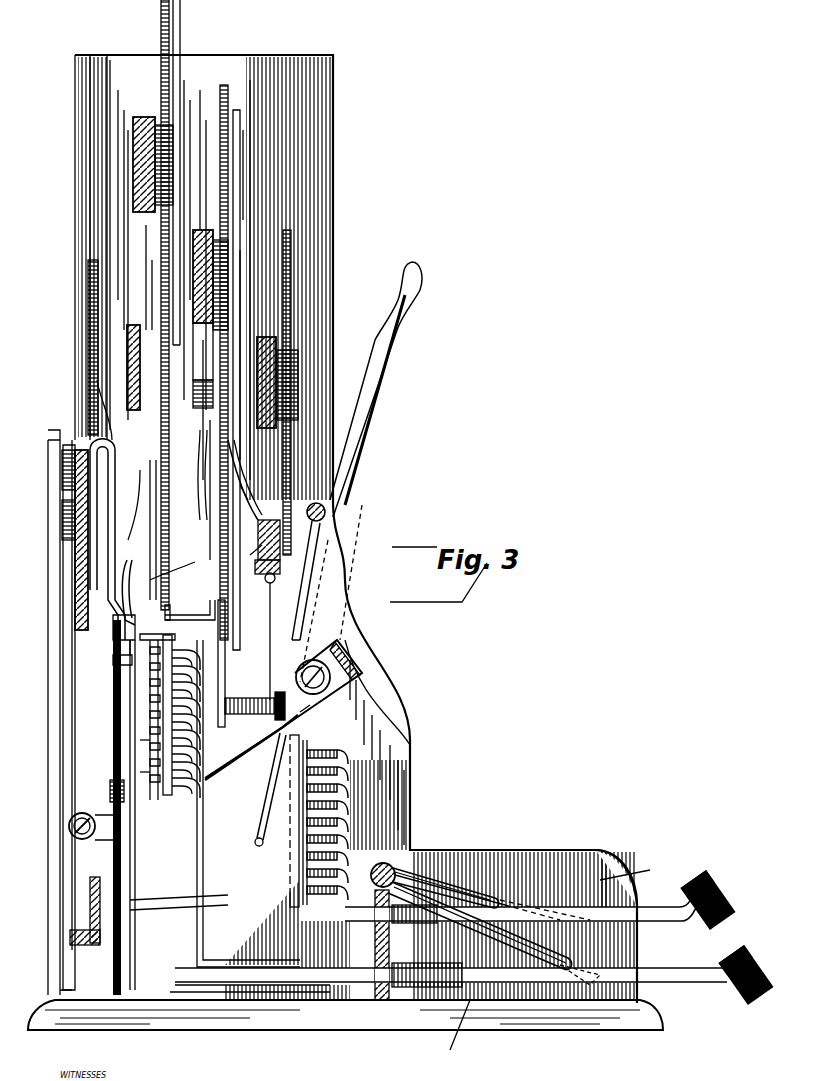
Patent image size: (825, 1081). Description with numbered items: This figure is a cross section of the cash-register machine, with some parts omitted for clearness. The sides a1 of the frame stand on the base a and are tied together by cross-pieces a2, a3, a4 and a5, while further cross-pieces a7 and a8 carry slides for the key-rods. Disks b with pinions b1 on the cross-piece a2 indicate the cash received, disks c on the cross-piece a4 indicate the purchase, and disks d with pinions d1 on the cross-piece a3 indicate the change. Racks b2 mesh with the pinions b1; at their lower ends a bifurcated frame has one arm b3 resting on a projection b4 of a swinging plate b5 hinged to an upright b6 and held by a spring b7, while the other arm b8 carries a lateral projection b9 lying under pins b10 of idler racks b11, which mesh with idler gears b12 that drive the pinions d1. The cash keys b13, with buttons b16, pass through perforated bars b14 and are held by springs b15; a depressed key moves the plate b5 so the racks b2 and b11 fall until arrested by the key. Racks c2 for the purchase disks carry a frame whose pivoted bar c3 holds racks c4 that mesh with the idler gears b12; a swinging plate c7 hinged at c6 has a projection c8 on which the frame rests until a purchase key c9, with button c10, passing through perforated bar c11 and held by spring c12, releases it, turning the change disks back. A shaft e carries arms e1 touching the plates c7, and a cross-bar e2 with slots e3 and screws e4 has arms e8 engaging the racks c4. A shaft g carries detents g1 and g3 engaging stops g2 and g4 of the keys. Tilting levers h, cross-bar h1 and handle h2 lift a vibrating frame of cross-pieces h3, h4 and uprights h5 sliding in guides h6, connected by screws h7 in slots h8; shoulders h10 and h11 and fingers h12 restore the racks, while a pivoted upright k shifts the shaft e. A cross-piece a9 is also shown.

The base a is at (390, 1000).
The sides of the frame a1 is at (333, 160).
The cross-piece a2 is at (133, 130).
The cross-piece a3 is at (193, 240).
The cross-piece a4 is at (135, 325).
The cross-piece a5 is at (265, 578).
The cross-piece a7 is at (640, 900).
The cross-piece a8 is at (380, 1000).
The bracket a9 is at (540, 985).
The disks b is at (190, 22).
The pinions b1 is at (155, 205).
The racks b2 is at (36, 530).
The arm of bifurcated frame b3 is at (175, 566).
The projection b4 is at (175, 637).
The swinging plates b5 is at (150, 700).
The uprights b6 is at (140, 740).
The springs b7 is at (140, 772).
The arm of bifurcated frame b8 is at (156, 520).
The lateral projection b9 is at (170, 612).
The pins b10 is at (195, 612).
The idler racks b11 is at (140, 530).
The idler gears b12 is at (208, 468).
The cash keys b13 is at (203, 840).
The perforated bars b14 is at (145, 850).
The springs b15 is at (440, 990).
The buttons b16 is at (752, 945).
The disks c is at (300, 430).
The racks c2 is at (265, 520).
The pivoted bar c3 is at (250, 698).
The racks c4 is at (240, 620).
The hinge c6 is at (255, 570).
The swinging-plate c7 is at (262, 760).
The lateral projection c8 is at (300, 715).
The purchase keys c9 is at (662, 892).
The buttons c10 is at (718, 870).
The perforated bars c11 is at (290, 912).
The springs c12 is at (470, 875).
The disks d is at (228, 100).
The pinions d1 is at (238, 300).
The shaft e is at (325, 527).
The arms e1 is at (275, 830).
The cross-bar e2 is at (268, 515).
The longitudinal slots e3 is at (250, 480).
The screws e4 is at (246, 553).
The laterally projecting arms e8 is at (305, 708).
The transverse shaft g is at (420, 862).
The rocking detents g1 is at (470, 880).
The lugs or stops g2 is at (500, 900).
The rocking detents g3 is at (540, 965).
The lugs or stops g4 is at (585, 975).
The tilting levers h is at (215, 745).
The cross-bar h1 is at (345, 665).
The operating handle h2 is at (375, 420).
The cross-piece h3 is at (75, 580).
The cross-piece h4 is at (70, 935).
The end-pieces or uprights h5 is at (113, 625).
The guides h6 is at (88, 335).
The screws h7 is at (69, 826).
The slots h8 is at (110, 790).
The shoulder h10 is at (125, 610).
The shoulder h11 is at (140, 660).
The forwardly projecting fingers h12 is at (228, 900).
The upright k is at (45, 772).